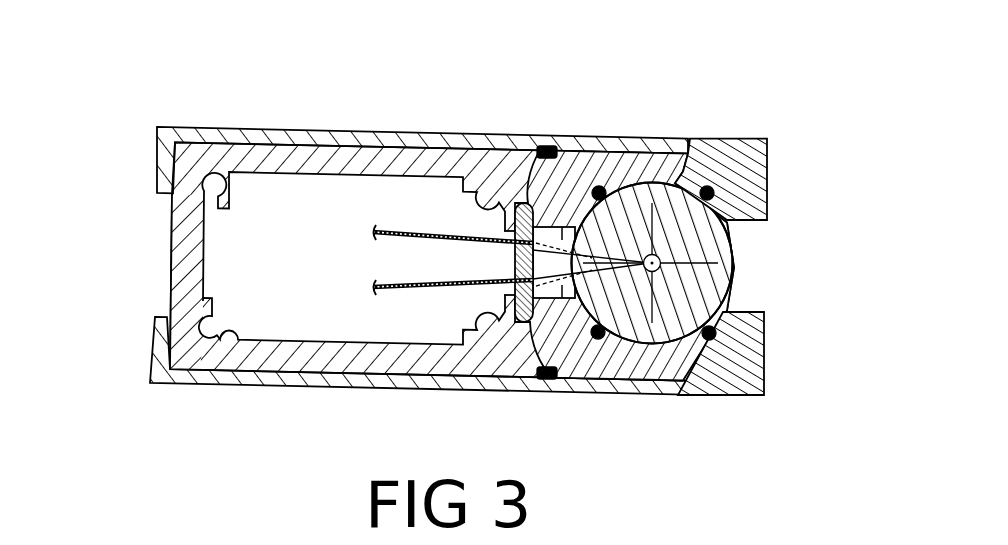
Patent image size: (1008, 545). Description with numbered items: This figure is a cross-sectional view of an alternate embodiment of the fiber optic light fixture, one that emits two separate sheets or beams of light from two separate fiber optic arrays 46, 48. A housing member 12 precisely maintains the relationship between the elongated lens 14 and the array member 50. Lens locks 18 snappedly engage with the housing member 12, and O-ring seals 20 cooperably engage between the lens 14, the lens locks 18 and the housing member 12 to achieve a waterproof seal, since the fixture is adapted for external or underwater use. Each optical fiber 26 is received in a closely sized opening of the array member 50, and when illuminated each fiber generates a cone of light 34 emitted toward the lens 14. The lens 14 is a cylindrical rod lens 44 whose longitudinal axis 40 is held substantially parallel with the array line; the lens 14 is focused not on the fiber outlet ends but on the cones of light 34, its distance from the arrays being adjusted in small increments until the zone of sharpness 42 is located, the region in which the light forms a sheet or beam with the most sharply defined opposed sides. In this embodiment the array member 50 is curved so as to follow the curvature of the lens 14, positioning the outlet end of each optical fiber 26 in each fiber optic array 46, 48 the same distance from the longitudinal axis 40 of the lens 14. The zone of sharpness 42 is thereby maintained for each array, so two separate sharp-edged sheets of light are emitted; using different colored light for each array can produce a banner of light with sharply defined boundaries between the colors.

The housing member 12 is at (170, 273).
The elongated lens 14 is at (740, 275).
The lens locks 18 is at (333, 128).
The O-ring seals 20 is at (547, 150).
The optical fiber 26 is at (388, 282).
The cone of light 34 is at (553, 222).
The longitudinal axis 40 is at (693, 182).
The zone of sharpness 42 is at (660, 268).
The cylindrical rod lens 44 is at (737, 245).
The fiber optic array 46 is at (545, 298).
The fiber optic array 48 is at (545, 226).
The array member 50 is at (512, 255).